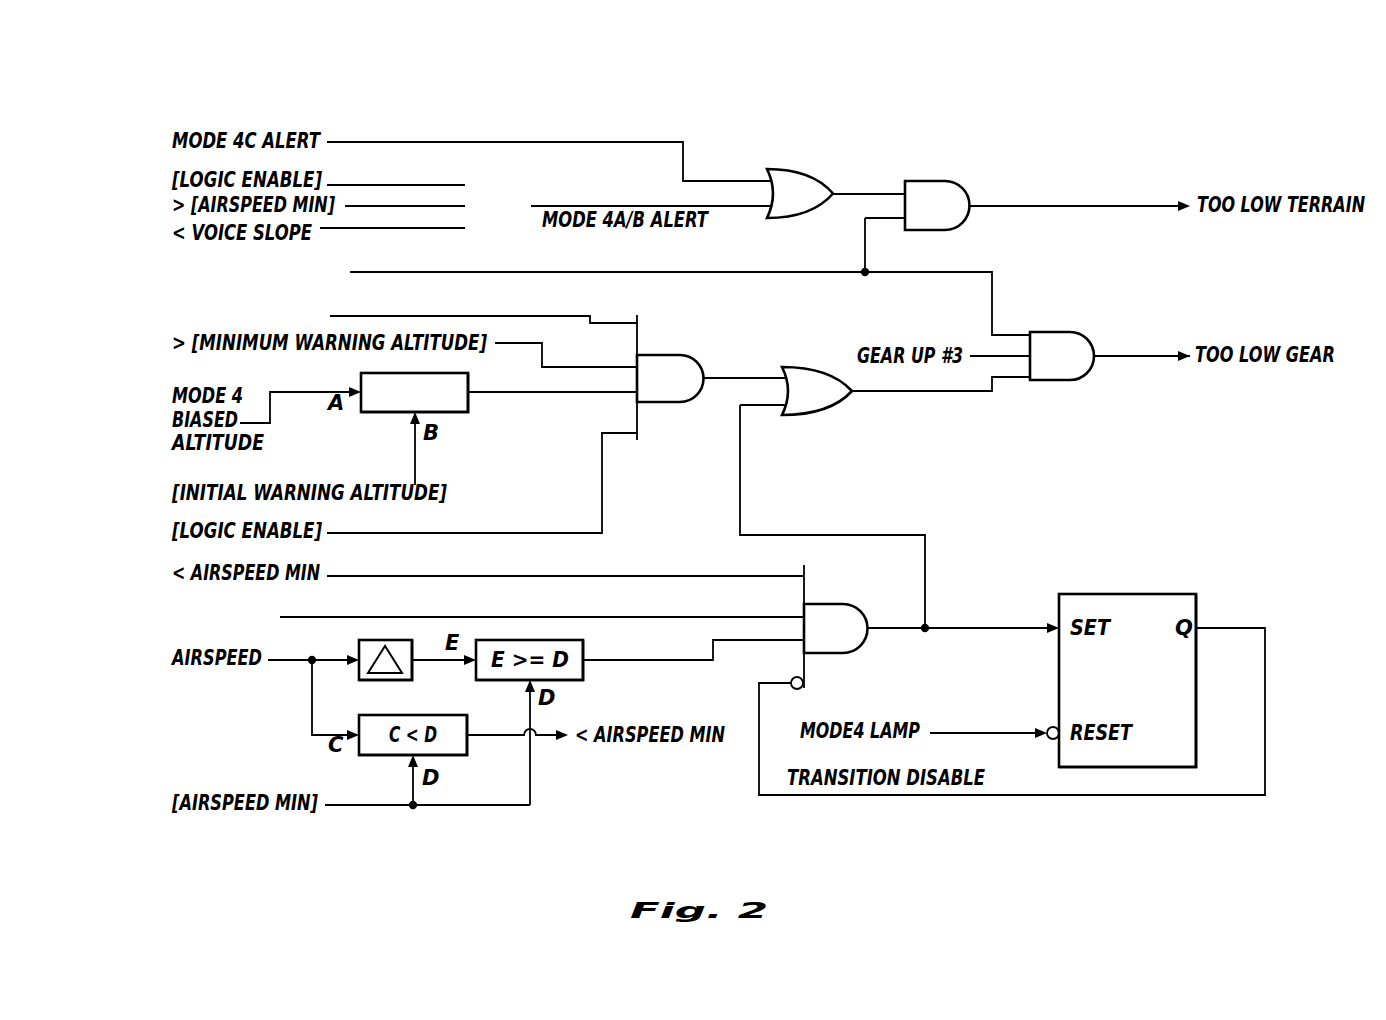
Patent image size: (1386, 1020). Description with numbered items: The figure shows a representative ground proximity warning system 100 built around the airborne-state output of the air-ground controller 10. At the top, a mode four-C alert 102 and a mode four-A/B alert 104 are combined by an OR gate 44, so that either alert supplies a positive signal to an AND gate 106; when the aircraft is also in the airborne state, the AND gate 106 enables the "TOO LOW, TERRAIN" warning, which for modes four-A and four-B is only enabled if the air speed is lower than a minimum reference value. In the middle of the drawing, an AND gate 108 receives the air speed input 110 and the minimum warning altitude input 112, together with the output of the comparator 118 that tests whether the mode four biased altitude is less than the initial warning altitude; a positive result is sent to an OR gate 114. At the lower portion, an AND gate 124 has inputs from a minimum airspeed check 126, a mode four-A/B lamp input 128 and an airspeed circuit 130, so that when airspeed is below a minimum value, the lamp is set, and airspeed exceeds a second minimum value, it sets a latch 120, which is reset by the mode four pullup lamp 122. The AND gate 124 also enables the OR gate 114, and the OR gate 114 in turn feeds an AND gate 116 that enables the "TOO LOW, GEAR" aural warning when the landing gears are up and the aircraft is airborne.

The warning system 100 is at (340, 76).
The mode 4C alert 102 is at (537, 142).
The mode 4A/B alert 104 is at (708, 221).
The OR gate 44 is at (798, 174).
The AND gate 106 is at (940, 187).
The air-ground controller 10 is at (165, 271).
The air speed input 110 is at (165, 319).
The minimum warning altitude input 112 is at (165, 347).
The AND gate 108 is at (686, 366).
The altitude comparator 118 is at (568, 393).
The OR gate 114 is at (830, 405).
The AND gate 116 is at (1064, 338).
The mode 4A/B lamp input 128 is at (652, 617).
The minimum airspeed check 126 is at (768, 576).
The AND gate 124 is at (833, 653).
The latch 120 is at (1230, 628).
The mode 4 pullup lamp 122 is at (988, 733).
The airspeed circuit 130 is at (483, 805).